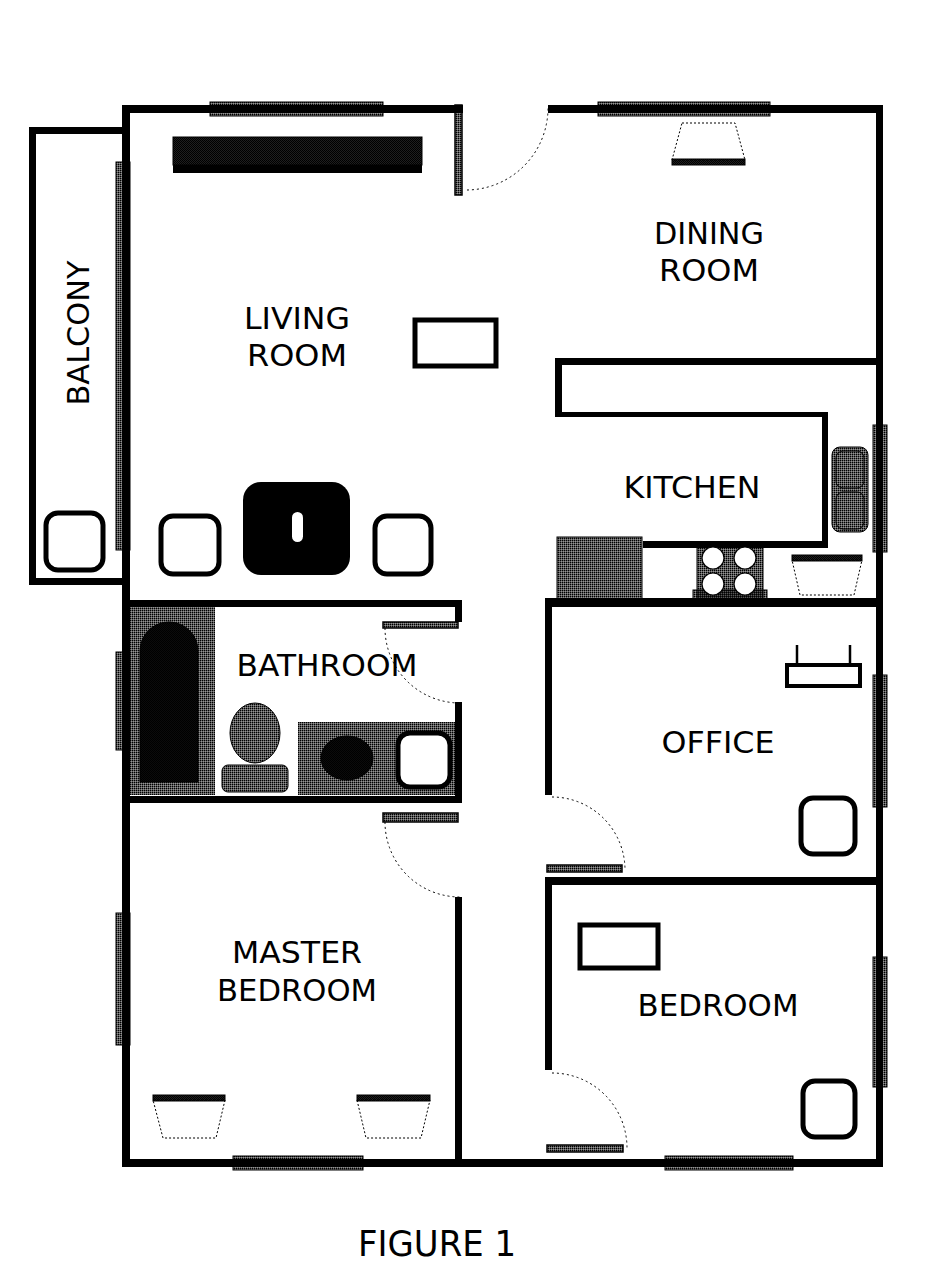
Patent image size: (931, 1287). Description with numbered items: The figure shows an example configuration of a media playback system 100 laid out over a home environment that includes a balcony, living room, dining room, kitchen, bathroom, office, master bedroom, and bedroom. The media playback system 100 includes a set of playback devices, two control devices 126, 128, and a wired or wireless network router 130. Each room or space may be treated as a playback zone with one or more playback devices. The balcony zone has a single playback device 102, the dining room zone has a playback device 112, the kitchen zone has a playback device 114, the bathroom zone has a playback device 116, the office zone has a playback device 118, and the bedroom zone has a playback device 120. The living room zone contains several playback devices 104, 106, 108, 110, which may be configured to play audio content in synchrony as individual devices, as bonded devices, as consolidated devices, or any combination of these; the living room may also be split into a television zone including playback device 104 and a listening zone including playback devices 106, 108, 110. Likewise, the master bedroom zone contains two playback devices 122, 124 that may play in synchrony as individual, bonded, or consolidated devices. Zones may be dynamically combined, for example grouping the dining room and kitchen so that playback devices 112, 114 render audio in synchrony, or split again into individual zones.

The media playback system 100 is at (559, 80).
The playback device 102 is at (74, 541).
The playback device 104 is at (297, 155).
The playback device 106 is at (190, 545).
The playback device 108 is at (403, 545).
The playback device 110 is at (296, 528).
The playback device 112 is at (708, 144).
The playback device 114 is at (827, 575).
The playback device 116 is at (424, 760).
The playback device 118 is at (828, 826).
The playback device 120 is at (829, 1109).
The playback device 122 is at (189, 1116).
The playback device 124 is at (393, 1116).
The control device 126 is at (455, 343).
The control device 128 is at (619, 946).
The network router 130 is at (785, 678).